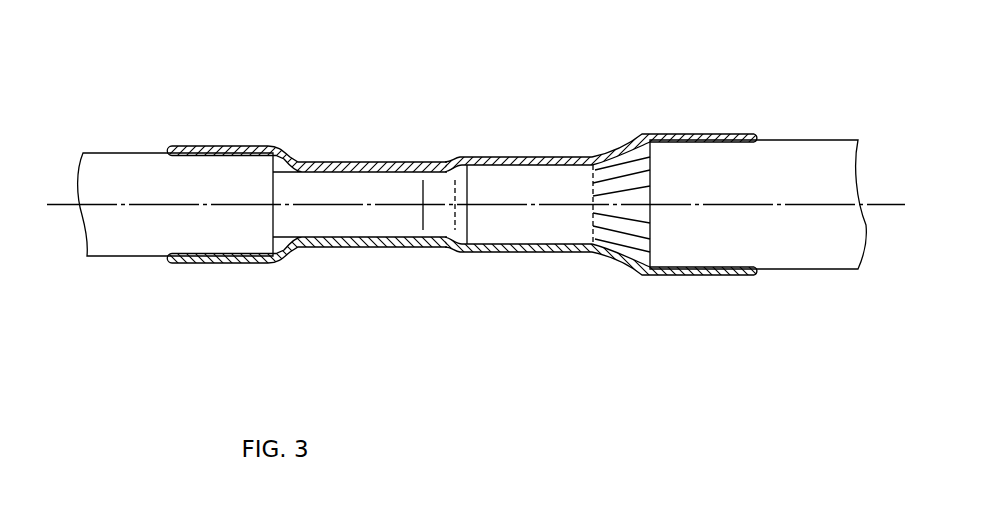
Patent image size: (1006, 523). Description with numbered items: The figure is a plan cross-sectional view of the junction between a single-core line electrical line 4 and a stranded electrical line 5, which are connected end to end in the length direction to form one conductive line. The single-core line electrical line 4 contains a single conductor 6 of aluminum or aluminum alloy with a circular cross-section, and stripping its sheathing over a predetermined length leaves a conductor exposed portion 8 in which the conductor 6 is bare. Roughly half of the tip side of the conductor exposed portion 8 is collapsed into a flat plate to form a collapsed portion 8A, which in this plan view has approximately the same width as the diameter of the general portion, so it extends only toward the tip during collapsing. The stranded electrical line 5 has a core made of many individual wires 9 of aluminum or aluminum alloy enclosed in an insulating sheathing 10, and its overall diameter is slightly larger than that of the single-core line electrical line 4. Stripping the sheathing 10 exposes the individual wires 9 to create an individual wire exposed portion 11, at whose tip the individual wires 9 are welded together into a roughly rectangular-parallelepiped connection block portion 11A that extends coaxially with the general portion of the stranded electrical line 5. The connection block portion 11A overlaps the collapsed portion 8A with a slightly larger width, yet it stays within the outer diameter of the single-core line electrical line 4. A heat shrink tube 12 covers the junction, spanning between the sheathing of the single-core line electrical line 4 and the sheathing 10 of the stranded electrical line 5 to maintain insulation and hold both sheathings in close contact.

The single-core line electrical line 4 is at (120, 148).
The stranded electrical line 5 is at (838, 135).
The conductor 6 is at (283, 190).
The conductor exposed portion 8 is at (374, 225).
The collapsed portion 8A is at (443, 222).
The individual wires 9 is at (634, 163).
The sheathing 10 is at (848, 263).
The individual wire exposed portion 11 is at (617, 230).
The connection block portion 11A is at (522, 220).
The heat shrink tube 12 is at (296, 250).